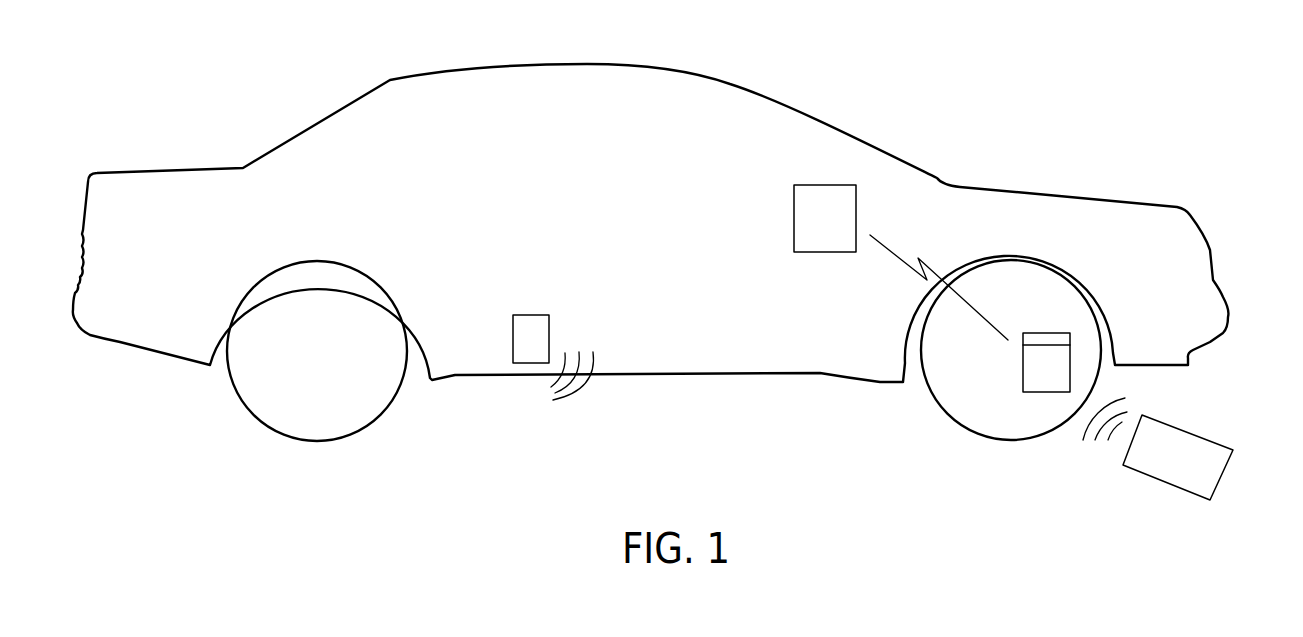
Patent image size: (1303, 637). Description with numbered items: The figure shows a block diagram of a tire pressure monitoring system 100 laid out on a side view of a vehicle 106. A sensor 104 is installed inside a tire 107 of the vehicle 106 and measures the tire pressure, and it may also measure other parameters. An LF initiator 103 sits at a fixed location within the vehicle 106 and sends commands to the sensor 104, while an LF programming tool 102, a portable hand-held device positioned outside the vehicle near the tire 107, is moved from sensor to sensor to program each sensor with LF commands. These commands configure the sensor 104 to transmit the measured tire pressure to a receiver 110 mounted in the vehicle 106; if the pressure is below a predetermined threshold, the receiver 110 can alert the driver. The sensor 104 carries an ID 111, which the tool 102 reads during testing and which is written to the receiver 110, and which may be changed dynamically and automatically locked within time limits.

The tire pressure monitoring system 100 is at (1151, 47).
The LF programming tool 102 is at (1185, 427).
The LF initiator 103 is at (532, 363).
The sensor 104 is at (1023, 363).
The vehicle 106 is at (903, 155).
The tire 107 is at (1012, 440).
The receiver 110 is at (823, 185).
The ID 111 is at (1048, 340).